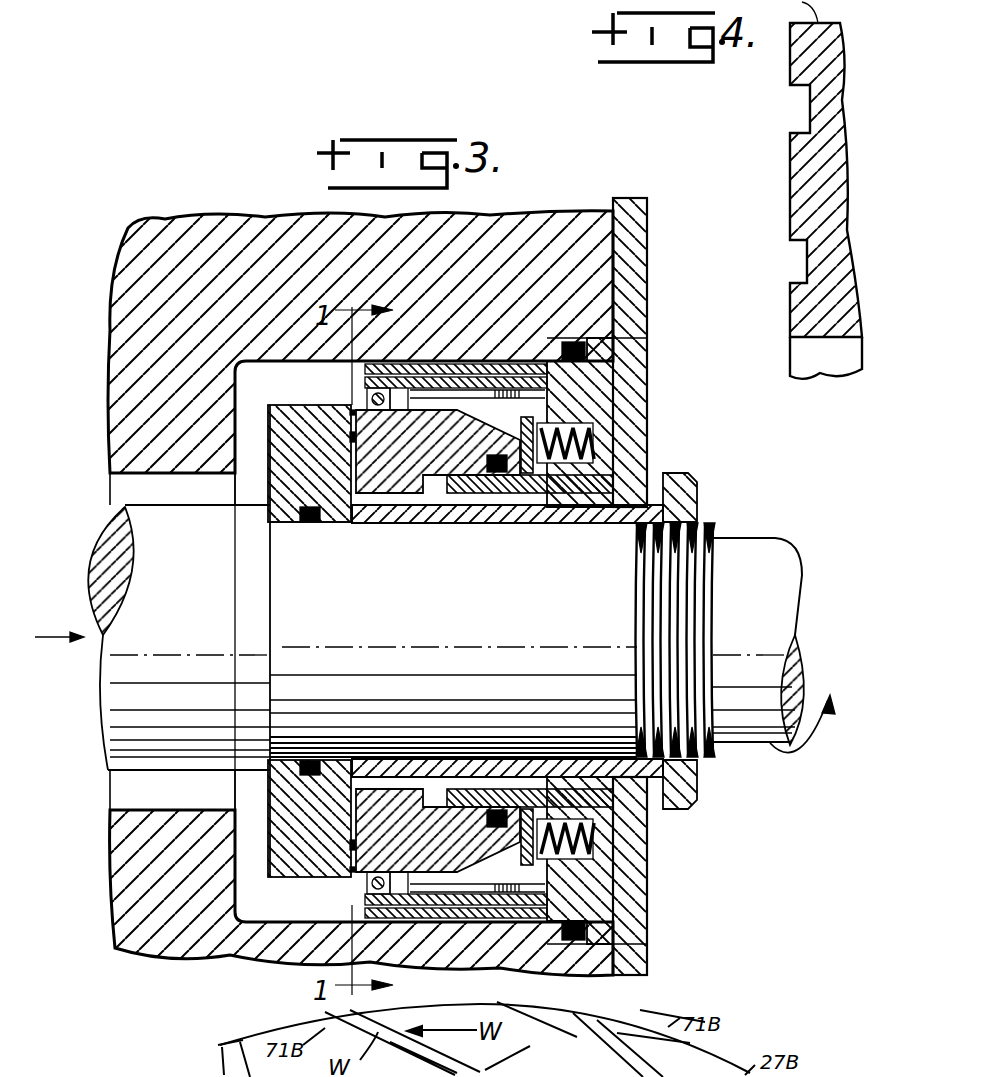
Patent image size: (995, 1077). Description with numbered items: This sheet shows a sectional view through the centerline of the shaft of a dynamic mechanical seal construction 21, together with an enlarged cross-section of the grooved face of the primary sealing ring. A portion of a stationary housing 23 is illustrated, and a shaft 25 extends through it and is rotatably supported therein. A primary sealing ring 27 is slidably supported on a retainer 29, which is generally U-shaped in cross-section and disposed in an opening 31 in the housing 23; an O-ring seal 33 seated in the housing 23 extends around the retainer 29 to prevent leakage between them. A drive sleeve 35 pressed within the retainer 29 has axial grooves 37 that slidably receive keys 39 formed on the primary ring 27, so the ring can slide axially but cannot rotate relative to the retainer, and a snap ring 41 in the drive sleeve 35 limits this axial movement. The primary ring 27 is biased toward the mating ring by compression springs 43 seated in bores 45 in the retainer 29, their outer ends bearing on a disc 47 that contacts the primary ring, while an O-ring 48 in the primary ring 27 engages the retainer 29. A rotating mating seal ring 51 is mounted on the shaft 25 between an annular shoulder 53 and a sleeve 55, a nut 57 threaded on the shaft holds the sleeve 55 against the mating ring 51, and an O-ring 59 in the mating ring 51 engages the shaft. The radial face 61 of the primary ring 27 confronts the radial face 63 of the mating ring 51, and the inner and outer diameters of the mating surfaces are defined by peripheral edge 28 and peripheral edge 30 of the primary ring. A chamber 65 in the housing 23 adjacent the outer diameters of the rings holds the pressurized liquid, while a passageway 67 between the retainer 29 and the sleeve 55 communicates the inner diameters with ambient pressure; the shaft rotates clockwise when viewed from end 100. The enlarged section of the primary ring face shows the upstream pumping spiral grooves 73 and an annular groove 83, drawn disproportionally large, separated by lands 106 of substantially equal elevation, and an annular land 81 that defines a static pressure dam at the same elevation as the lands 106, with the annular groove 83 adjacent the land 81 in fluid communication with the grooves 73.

In FIG. 3, the dynamic mechanical seal construction 21 is at (728, 513).
In FIG. 3, the stationary housing 23 is at (182, 232).
In FIG. 3, the shaft 25 is at (461, 641).
In FIG. 3, the primary sealing ring 27 is at (397, 472).
In FIG. 4, the peripheral edge 28 is at (793, 361).
In FIG. 3, the retainer 29 is at (590, 401).
In FIG. 4, the peripheral edge 30 is at (795, 11).
In FIG. 3, the opening 31 is at (600, 905).
In FIG. 3, the O-ring seal 33 is at (580, 346).
In FIG. 3, the drive sleeve 35 is at (487, 917).
In FIG. 3, the axial grooves 37 is at (507, 917).
In FIG. 3, the keys 39 is at (447, 922).
In FIG. 3, the snap ring 41 is at (365, 893).
In FIG. 3, the compression springs 43 is at (588, 848).
In FIG. 3, the bores 45 is at (565, 447).
In FIG. 3, the disc 47 is at (522, 473).
In FIG. 3, the O-ring 48 is at (497, 473).
In FIG. 3, the mating seal ring 51 is at (286, 410).
In FIG. 3, the annular shoulder 53 is at (275, 527).
In FIG. 3, the sleeve 55 is at (575, 523).
In FIG. 3, the nut 57 is at (693, 793).
In FIG. 3, the O-ring 59 is at (317, 520).
In FIG. 3, the radial face 61 is at (352, 412).
In FIG. 4, the radial face 61 is at (782, 154).
In FIG. 3, the radial face 63 is at (375, 765).
In FIG. 3, the chamber 65 is at (267, 910).
In FIG. 3, the passageway 67 is at (452, 478).
In FIG. 4, the upstream pumping spiral grooves 73 is at (810, 107).
In FIG. 4, the annular land 81 is at (790, 312).
In FIG. 4, the annular groove 83 is at (807, 263).
In FIG. 3, the end 100 is at (58, 666).
In FIG. 4, the lands 106 is at (790, 60).